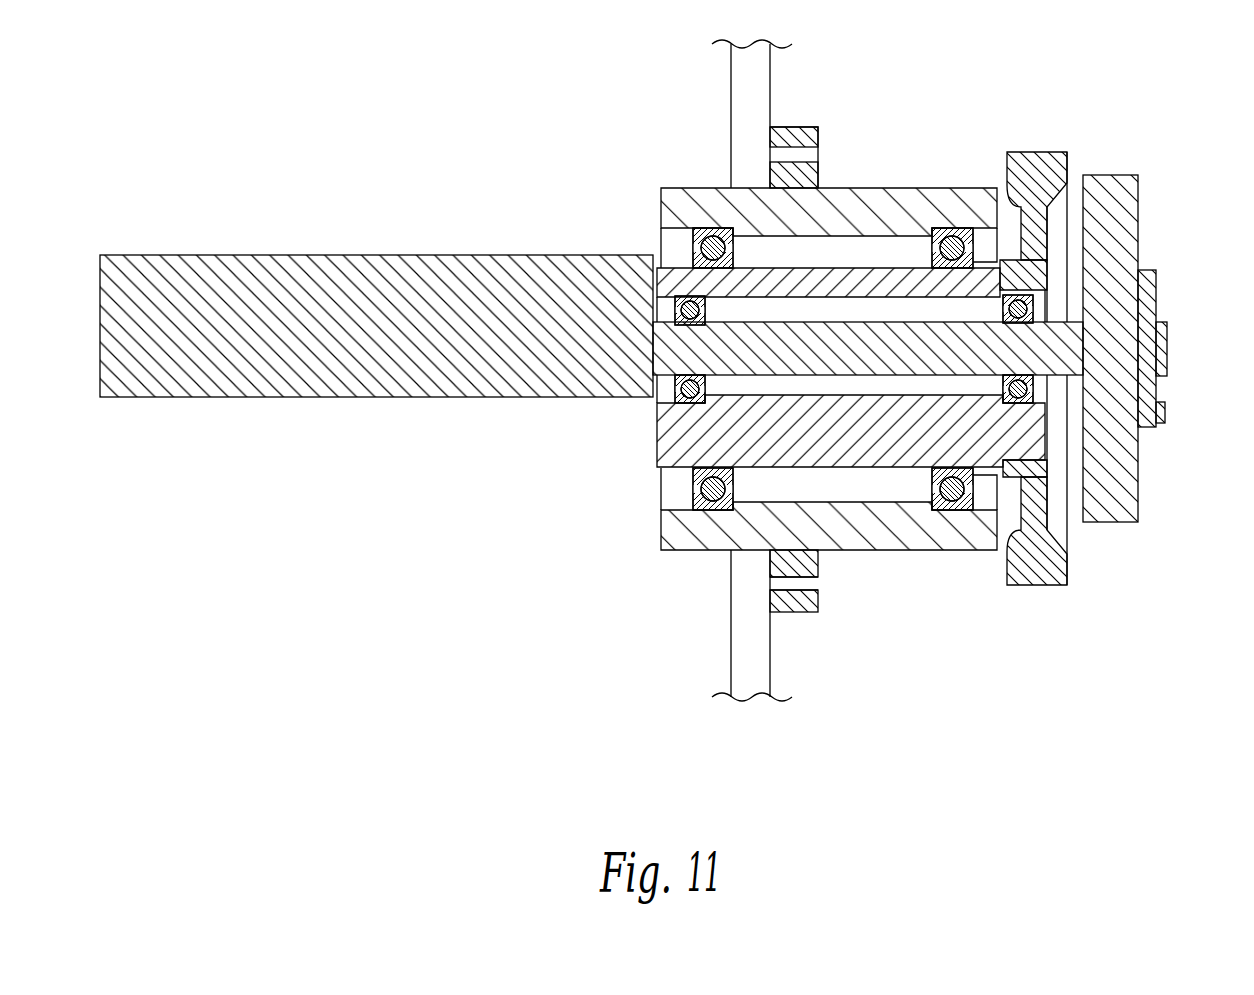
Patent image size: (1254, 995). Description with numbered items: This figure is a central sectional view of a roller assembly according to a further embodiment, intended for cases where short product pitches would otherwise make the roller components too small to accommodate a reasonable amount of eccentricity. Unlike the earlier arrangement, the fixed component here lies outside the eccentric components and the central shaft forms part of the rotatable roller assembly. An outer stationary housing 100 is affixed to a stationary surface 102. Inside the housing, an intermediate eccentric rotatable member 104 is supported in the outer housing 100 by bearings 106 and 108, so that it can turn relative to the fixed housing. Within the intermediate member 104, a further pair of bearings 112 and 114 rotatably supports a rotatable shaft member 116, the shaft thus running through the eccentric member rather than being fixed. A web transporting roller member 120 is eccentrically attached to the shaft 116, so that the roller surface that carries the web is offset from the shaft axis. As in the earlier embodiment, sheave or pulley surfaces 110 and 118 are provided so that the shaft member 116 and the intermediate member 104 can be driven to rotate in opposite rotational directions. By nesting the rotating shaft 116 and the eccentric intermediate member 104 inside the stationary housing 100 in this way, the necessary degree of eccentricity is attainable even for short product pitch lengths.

The outer stationary housing 100 is at (895, 532).
The stationary surface 102 is at (770, 658).
The intermediate eccentric rotatable member 104 is at (657, 437).
The bearing 106 is at (707, 512).
The bearing 108 is at (955, 512).
The sheave or pulley surface 110 is at (1038, 585).
The bearing 112 is at (657, 300).
The bearing 114 is at (1017, 263).
The rotatable shaft member 116 is at (1050, 357).
The sheave or pulley surface 118 is at (1110, 187).
The web transporting roller member 120 is at (296, 350).